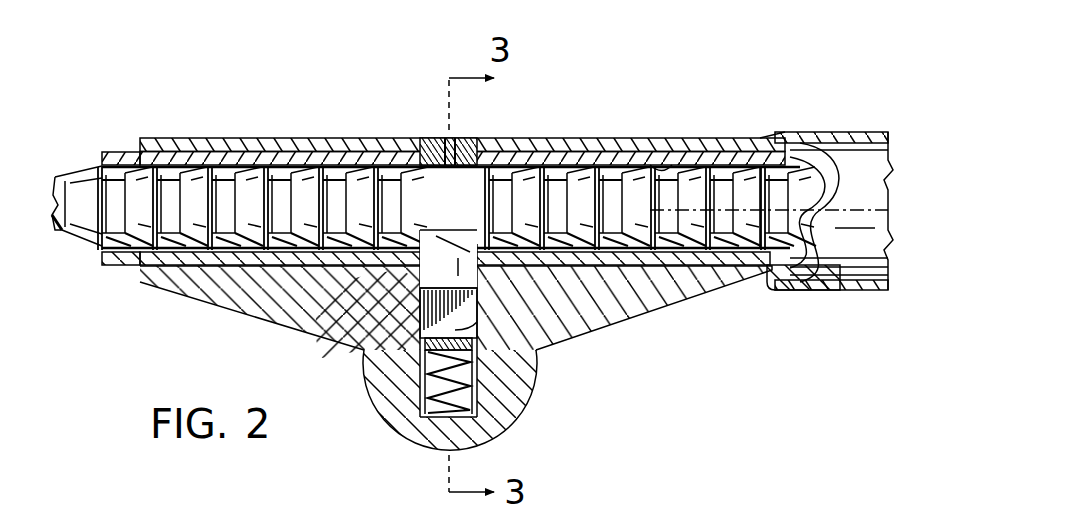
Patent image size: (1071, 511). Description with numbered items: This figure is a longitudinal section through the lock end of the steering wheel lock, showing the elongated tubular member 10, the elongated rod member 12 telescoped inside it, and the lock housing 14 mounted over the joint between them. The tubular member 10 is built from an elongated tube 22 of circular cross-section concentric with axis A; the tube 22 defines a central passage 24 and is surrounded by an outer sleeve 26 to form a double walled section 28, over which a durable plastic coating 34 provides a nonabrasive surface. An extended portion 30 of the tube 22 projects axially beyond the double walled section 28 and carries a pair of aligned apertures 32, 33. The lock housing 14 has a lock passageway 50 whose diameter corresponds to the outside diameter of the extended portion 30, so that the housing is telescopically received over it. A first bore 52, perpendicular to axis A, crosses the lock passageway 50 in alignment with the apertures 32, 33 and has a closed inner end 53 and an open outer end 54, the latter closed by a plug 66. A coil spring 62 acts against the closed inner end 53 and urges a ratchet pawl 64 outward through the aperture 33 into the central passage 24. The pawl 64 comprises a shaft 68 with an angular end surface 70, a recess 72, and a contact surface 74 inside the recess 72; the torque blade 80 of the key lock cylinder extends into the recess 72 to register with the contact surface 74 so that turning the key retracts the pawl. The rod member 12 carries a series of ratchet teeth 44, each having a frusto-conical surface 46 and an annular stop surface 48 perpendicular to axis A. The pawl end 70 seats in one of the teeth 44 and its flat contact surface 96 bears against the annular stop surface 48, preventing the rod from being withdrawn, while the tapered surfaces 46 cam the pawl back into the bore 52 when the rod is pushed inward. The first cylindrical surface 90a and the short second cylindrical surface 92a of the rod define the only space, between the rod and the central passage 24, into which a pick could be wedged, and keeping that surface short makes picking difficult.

The elongated tubular member 10 is at (878, 130).
The elongated rod member 12 is at (80, 243).
The lock housing 14 is at (204, 300).
The elongated tube 22 is at (822, 165).
The central passage 24 is at (725, 255).
The outer sleeve 26 is at (862, 148).
The double walled section 28 is at (762, 155).
The extended portion 30 is at (117, 150).
The aperture 32 is at (478, 140).
The aperture 33 is at (470, 258).
The durable plastic coating 34 is at (866, 292).
The ratchet teeth 44 is at (190, 174).
The frusto-conical surface 46 is at (302, 167).
The annular stop surface 48 is at (287, 140).
The lock passageway 50 is at (668, 165).
The first bore 52 is at (512, 428).
The closed inner end 53 is at (445, 418).
The open outer end 54 is at (430, 140).
The coil spring 62 is at (432, 403).
The ratchet pawl 64 is at (422, 352).
The plug 66 is at (460, 140).
The shaft 68 is at (428, 395).
The angular end surface 70 is at (606, 309).
The recess 72 is at (480, 270).
The contact surface 74 is at (500, 342).
The torque blade 80 is at (505, 388).
The first cylindrical surface 90a is at (445, 138).
The second cylindrical surface 92a is at (413, 278).
The flat contact surface 96 is at (350, 300).
The axis A is at (800, 292).